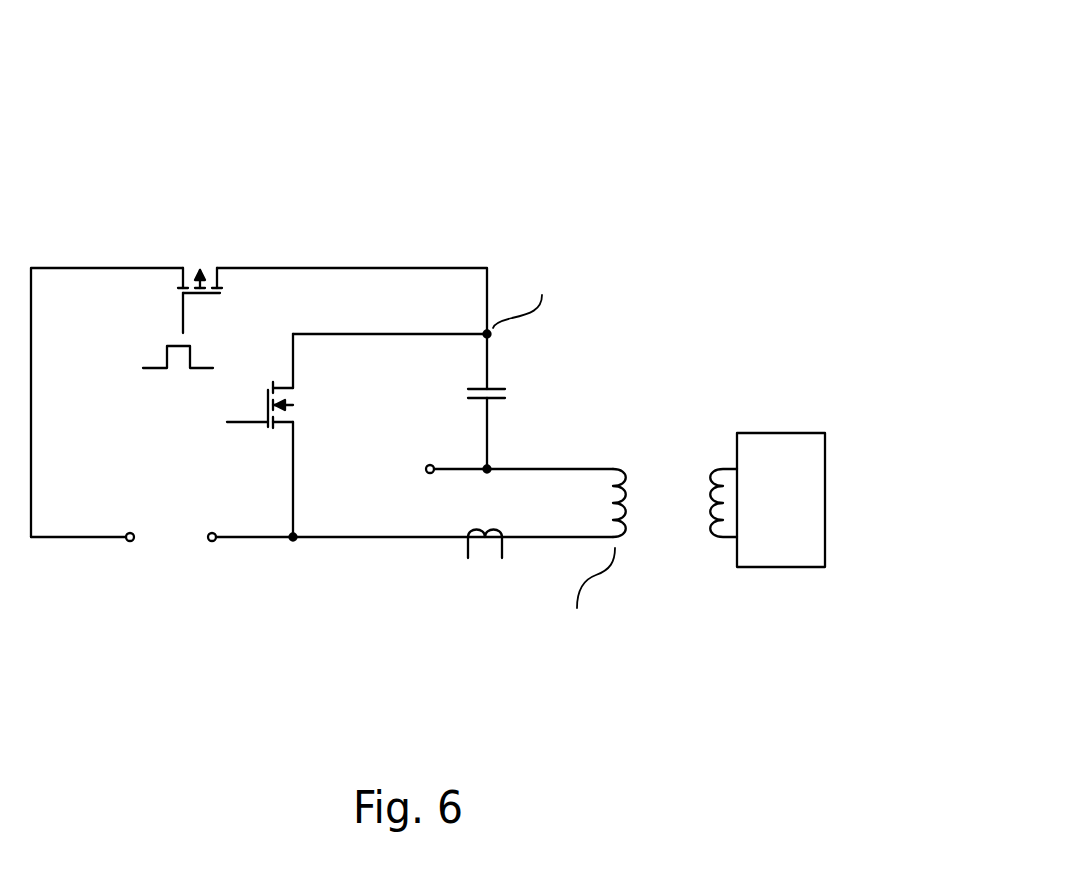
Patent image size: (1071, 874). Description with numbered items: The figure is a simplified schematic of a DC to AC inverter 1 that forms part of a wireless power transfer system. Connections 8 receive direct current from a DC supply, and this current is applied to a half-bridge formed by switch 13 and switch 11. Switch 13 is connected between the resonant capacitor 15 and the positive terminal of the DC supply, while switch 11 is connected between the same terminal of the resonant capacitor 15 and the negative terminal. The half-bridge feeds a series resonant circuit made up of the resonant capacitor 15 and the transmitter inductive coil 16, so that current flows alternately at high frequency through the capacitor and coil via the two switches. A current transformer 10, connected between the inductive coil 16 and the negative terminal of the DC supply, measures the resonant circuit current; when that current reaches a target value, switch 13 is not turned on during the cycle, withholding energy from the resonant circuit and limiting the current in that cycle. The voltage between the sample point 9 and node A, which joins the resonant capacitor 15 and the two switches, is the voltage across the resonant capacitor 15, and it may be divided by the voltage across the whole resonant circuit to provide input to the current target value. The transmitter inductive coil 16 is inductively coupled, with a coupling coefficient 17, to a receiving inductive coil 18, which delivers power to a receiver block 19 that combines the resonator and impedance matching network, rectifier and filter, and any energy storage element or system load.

The inverter 1 is at (402, 98).
The connections 8 is at (208, 522).
The sample point 9 is at (428, 452).
The current transformer 10 is at (492, 572).
The switch 11 is at (272, 372).
The switch 13 is at (173, 283).
The resonant capacitor 15 is at (500, 372).
The transmitter inductive coil 16 is at (617, 463).
The coupling coefficient 17 is at (670, 522).
The receiving inductive coil 18 is at (723, 462).
The receiver block 19 is at (797, 501).